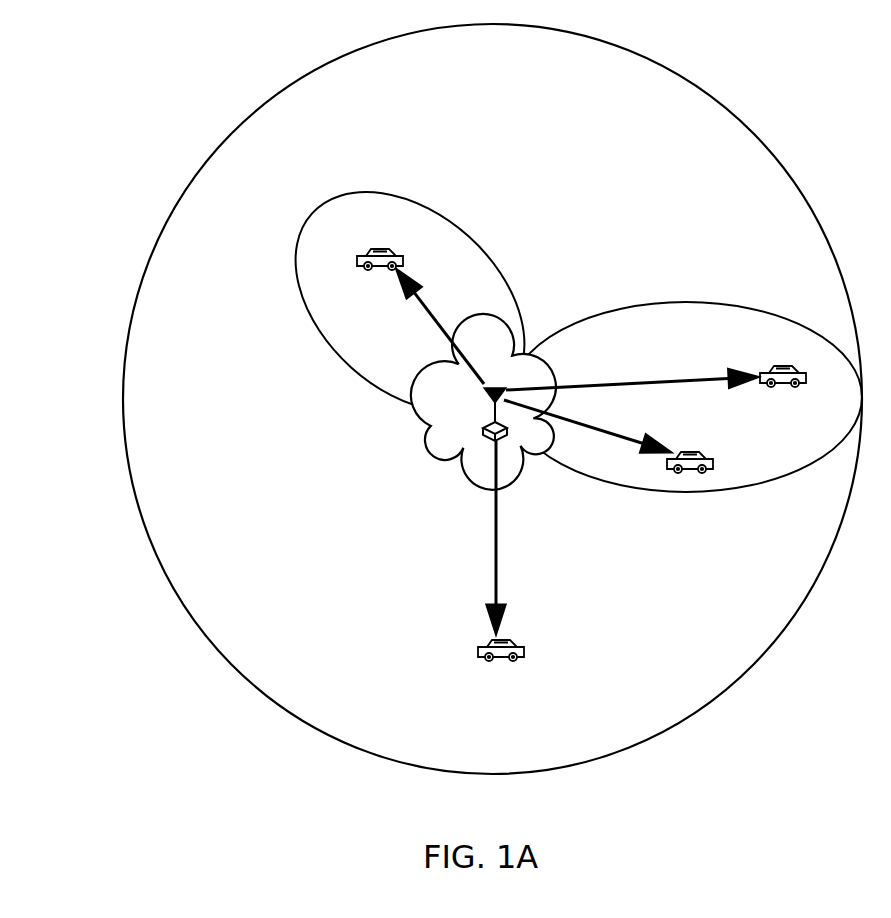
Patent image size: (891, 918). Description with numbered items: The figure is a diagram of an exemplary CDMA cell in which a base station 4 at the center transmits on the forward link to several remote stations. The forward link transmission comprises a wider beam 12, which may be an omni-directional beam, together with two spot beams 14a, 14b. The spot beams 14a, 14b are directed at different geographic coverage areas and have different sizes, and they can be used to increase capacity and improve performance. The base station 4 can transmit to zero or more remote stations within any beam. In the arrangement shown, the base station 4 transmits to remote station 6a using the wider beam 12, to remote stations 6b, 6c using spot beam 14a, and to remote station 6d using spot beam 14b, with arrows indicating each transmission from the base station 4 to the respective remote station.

The wider beam 12 is at (741, 114).
The spot beam 14a is at (692, 303).
The spot beam 14b is at (445, 207).
The base station 4 is at (495, 388).
The remote station 6a is at (508, 640).
The remote station 6b is at (778, 366).
The remote station 6c is at (698, 452).
The remote station 6d is at (372, 249).